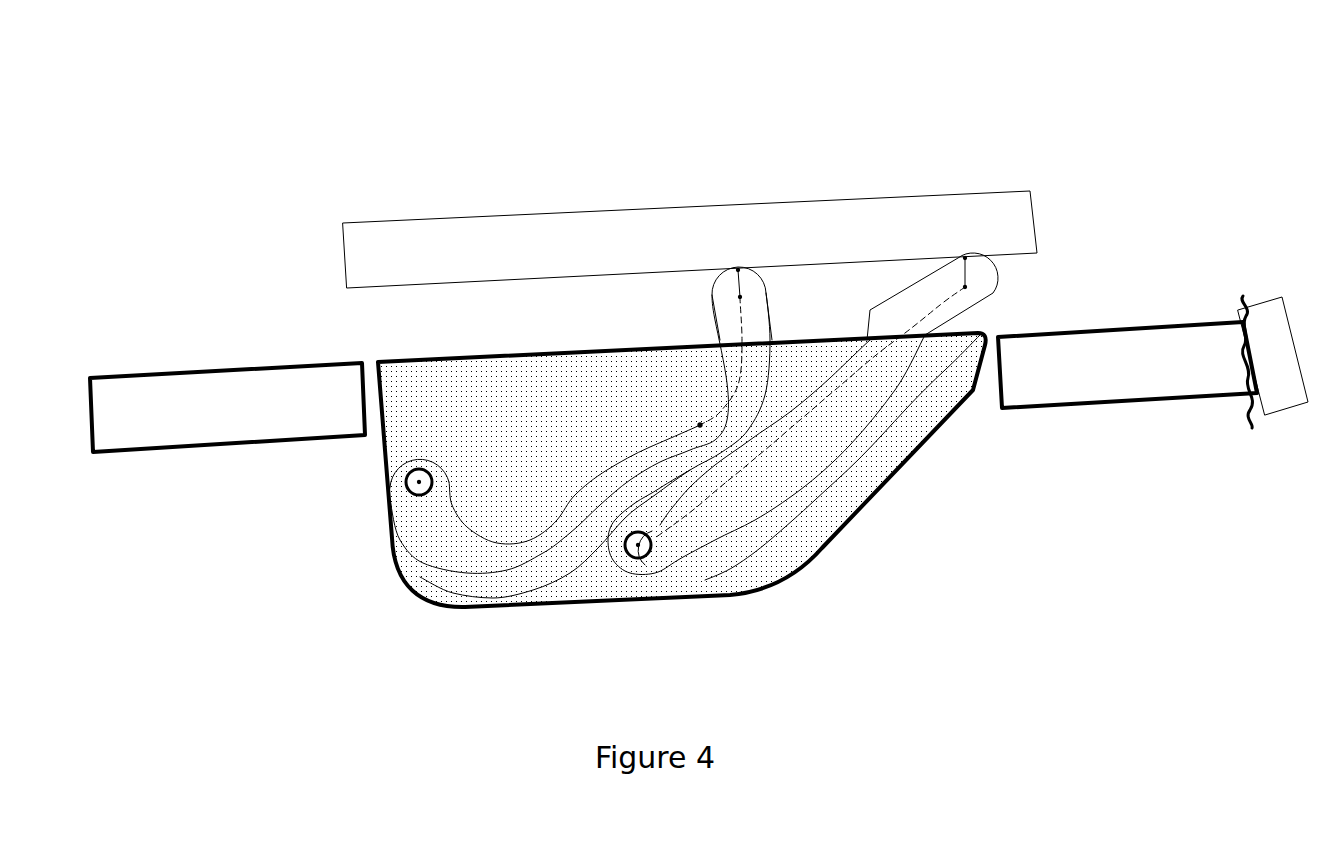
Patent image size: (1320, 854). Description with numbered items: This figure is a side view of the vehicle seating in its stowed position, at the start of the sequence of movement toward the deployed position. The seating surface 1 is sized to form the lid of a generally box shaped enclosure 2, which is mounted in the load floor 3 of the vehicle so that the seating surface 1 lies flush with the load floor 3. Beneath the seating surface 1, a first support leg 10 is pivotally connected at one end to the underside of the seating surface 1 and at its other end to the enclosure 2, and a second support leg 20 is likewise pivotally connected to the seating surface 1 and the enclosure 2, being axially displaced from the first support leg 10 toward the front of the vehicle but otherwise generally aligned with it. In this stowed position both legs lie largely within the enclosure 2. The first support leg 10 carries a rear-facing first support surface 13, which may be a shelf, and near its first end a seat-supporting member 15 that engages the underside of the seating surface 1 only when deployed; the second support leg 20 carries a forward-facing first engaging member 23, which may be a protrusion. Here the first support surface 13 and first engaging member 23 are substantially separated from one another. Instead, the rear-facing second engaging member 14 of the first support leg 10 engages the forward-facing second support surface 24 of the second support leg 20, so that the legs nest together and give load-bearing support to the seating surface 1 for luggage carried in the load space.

The seating surface 1 is at (542, 242).
The enclosure 2 is at (793, 549).
The load floor 3 is at (225, 388).
The first support leg 10 is at (437, 547).
The first support surface 13 is at (602, 548).
The second engaging member 14 is at (717, 477).
The seat-supporting member 15 is at (772, 337).
The second support leg 20 is at (675, 520).
The first engaging member 23 is at (900, 287).
The second support surface 24 is at (697, 497).